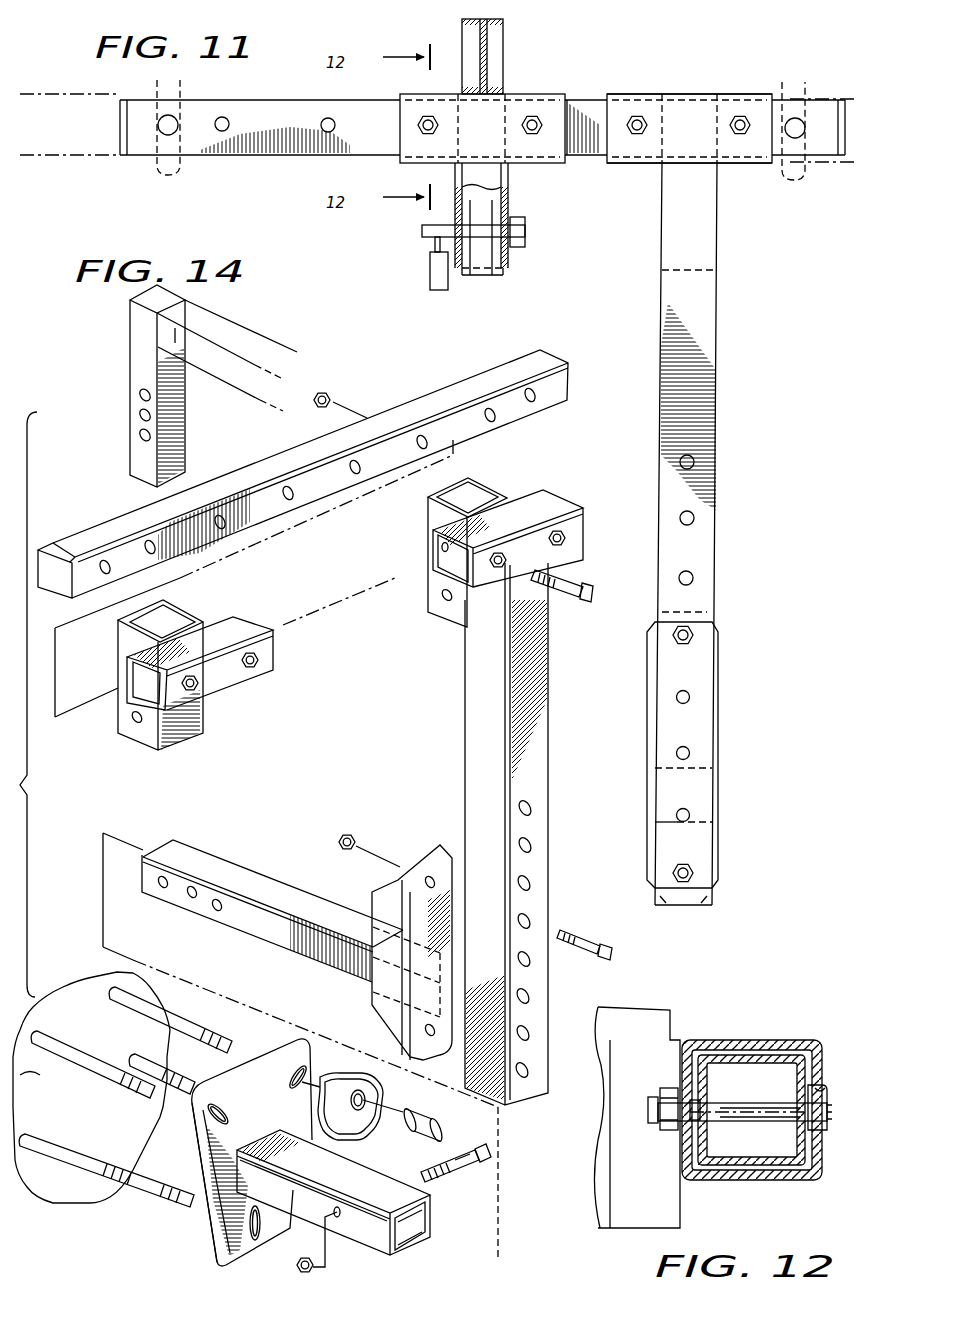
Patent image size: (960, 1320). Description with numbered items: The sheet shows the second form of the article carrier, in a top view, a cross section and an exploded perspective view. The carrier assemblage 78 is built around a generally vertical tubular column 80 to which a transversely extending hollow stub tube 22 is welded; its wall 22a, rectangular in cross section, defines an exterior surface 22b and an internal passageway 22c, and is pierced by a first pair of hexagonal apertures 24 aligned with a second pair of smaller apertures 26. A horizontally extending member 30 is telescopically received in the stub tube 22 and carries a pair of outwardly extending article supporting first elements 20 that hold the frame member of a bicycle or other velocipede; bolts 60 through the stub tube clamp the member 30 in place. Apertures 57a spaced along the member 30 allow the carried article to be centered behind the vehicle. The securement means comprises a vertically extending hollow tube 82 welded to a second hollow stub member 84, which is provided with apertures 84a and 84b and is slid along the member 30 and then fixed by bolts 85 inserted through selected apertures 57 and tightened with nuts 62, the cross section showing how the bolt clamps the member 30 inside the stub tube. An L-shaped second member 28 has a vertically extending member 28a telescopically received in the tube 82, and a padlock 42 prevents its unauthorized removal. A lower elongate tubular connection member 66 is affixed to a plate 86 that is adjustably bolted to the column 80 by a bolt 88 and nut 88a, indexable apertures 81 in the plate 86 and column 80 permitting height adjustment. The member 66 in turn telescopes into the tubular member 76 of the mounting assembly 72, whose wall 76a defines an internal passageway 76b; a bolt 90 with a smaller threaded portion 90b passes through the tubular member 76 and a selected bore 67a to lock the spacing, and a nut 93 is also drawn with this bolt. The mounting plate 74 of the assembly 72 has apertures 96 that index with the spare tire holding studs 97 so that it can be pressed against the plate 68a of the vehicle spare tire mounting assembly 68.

In FIG. 11, the article supporting first elements 20 is at (161, 172).
In FIG. 11, the hollow stub tube 22 is at (701, 94).
In FIG. 14, the hollow stub tube 22 is at (563, 496).
In FIG. 11, the wall of stub tube 22a is at (692, 152).
In FIG. 14, the wall of stub tube 22a is at (541, 547).
In FIG. 14, the exterior surface 22b is at (485, 578).
In FIG. 14, the internal passageway 22c is at (448, 557).
In FIG. 14, the first pair of apertures 24 is at (497, 553).
In FIG. 14, the second pair of apertures 26 is at (442, 550).
In FIG. 11, the second member of securement means 28 is at (510, 38).
In FIG. 14, the second member of securement means 28 is at (128, 348).
In FIG. 14, the vertically extending member 28a is at (137, 458).
In FIG. 11, the horizontally extending member 30 is at (248, 150).
In FIG. 14, the horizontally extending member 30 is at (437, 392).
In FIG. 12, the horizontally extending member 30 is at (786, 1055).
In FIG. 11, the padlock 42 is at (430, 275).
In FIG. 14, the apertures 57 is at (289, 487).
In FIG. 11, the apertures 57a is at (324, 124).
In FIG. 11, the bolts 60 is at (638, 142).
In FIG. 14, the bolts 60 is at (580, 602).
In FIG. 14, the nuts 62 is at (331, 395).
In FIG. 12, the nuts 62 is at (669, 1131).
In FIG. 14, the lower elongate tubular connection member 66 is at (249, 868).
In FIG. 14, the first bore 67a is at (215, 912).
In FIG. 14, the spare tire carrier or mounting assembly 68 is at (72, 998).
In FIG. 14, the plate of spare tire mounting assembly 68a is at (41, 1087).
In FIG. 14, the mounting assembly 72 is at (203, 1229).
In FIG. 14, the mounting plate 74 is at (263, 1077).
In FIG. 14, the tubular member 76 is at (433, 1217).
In FIG. 14, the wall of tubular member 76a is at (348, 1165).
In FIG. 14, the internal passageway 76b is at (330, 1204).
In FIG. 11, the carrier assemblage 78 is at (655, 84).
In FIG. 11, the tubular column 80 is at (718, 407).
In FIG. 11, the indexable apertures 81 is at (691, 577).
In FIG. 14, the indexable apertures 81 is at (532, 918).
In FIG. 11, the first member of securement means 82 is at (492, 278).
In FIG. 14, the first member of securement means 82 is at (128, 745).
In FIG. 12, the first member of securement means 82 is at (735, 1037).
In FIG. 11, the second hollow stub member 84 is at (536, 165).
In FIG. 14, the second hollow stub member 84 is at (238, 626).
In FIG. 12, the second hollow stub member 84 is at (702, 1040).
In FIG. 14, the apertures 84a is at (200, 687).
In FIG. 12, the apertures 84a is at (825, 1087).
In FIG. 14, the apertures 84b is at (138, 670).
In FIG. 12, the apertures 84b is at (700, 1101).
In FIG. 11, the bolts 85 is at (415, 126).
In FIG. 12, the bolts 85 is at (762, 1121).
In FIG. 11, the plate 86 is at (718, 830).
In FIG. 14, the plate 86 is at (400, 882).
In FIG. 11, the bolt 88 is at (698, 634).
In FIG. 14, the bolt 88 is at (614, 953).
In FIG. 14, the nut 88a is at (347, 833).
In FIG. 14, the bolt 90 is at (493, 1154).
In FIG. 14, the second threaded portion 90b is at (461, 1165).
In FIG. 14, the nut 93 is at (318, 1267).
In FIG. 14, the apertures 96 is at (287, 1090).
In FIG. 14, the spare tire holding studs 97 is at (140, 1016).